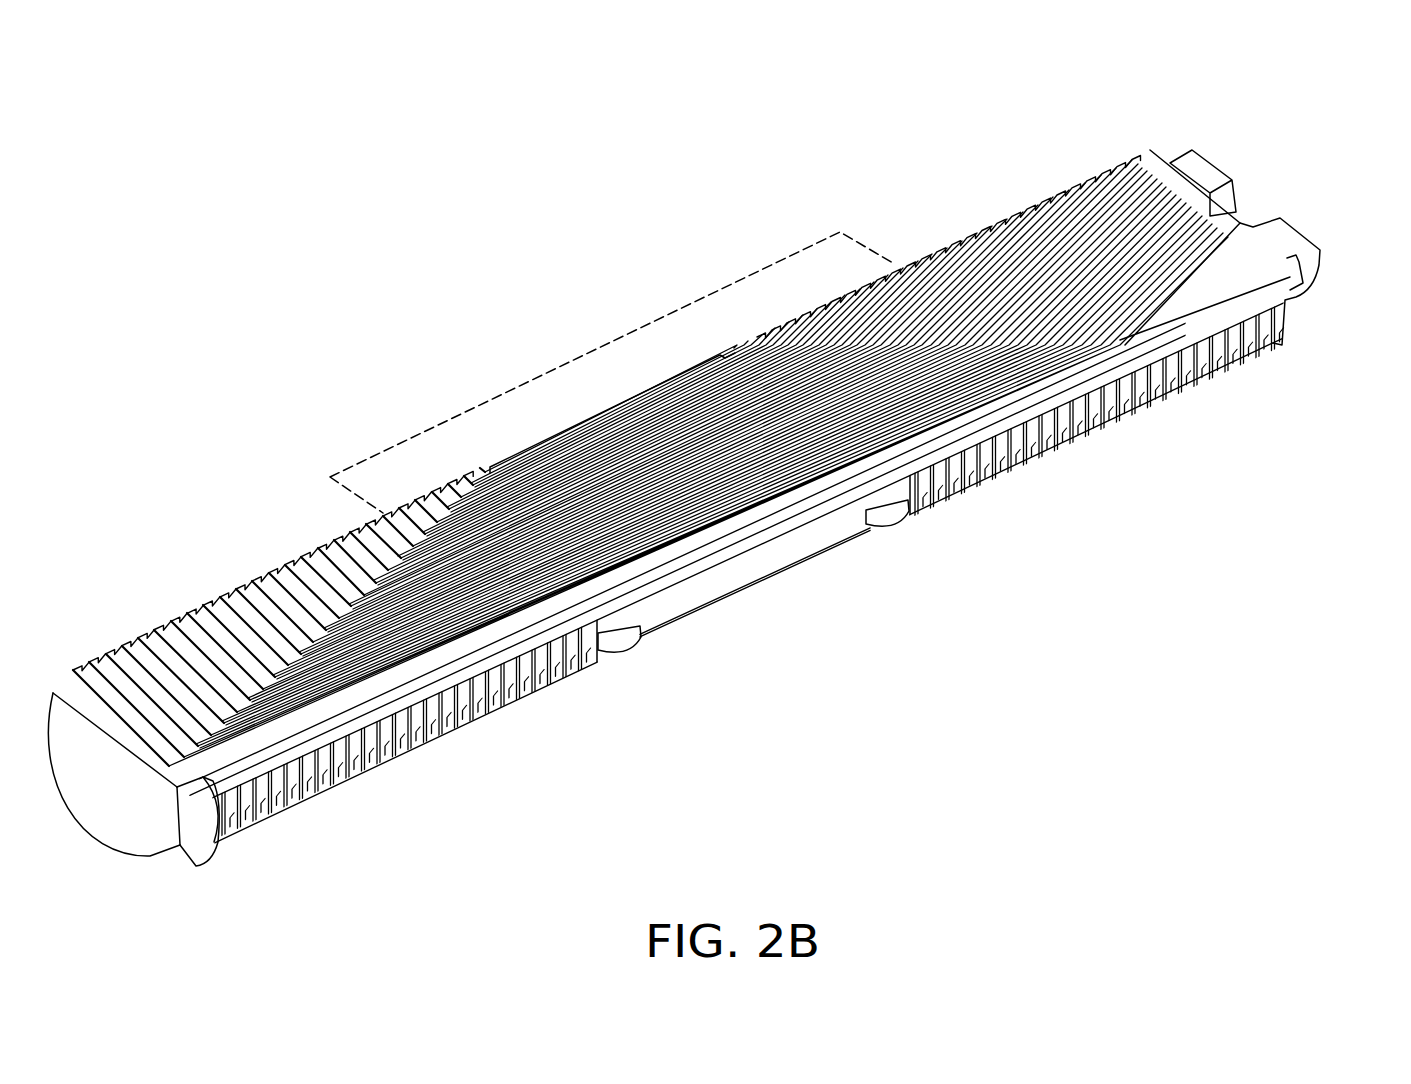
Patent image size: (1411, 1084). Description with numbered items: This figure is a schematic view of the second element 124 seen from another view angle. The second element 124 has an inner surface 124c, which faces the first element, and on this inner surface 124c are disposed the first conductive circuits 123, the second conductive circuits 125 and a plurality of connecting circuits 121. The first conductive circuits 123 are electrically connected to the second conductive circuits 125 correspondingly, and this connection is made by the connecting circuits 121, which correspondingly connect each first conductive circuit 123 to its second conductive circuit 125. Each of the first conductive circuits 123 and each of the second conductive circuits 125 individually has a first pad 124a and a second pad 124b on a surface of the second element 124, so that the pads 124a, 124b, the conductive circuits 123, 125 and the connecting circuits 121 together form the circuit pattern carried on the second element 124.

The connecting circuits 121 is at (690, 545).
The first conductive circuits 123 is at (1141, 178).
The second element 124 is at (1297, 292).
The first pad 124a is at (1103, 418).
The second pad 124b is at (273, 818).
The inner surface 124c is at (1247, 252).
The second conductive circuits 125 is at (113, 647).